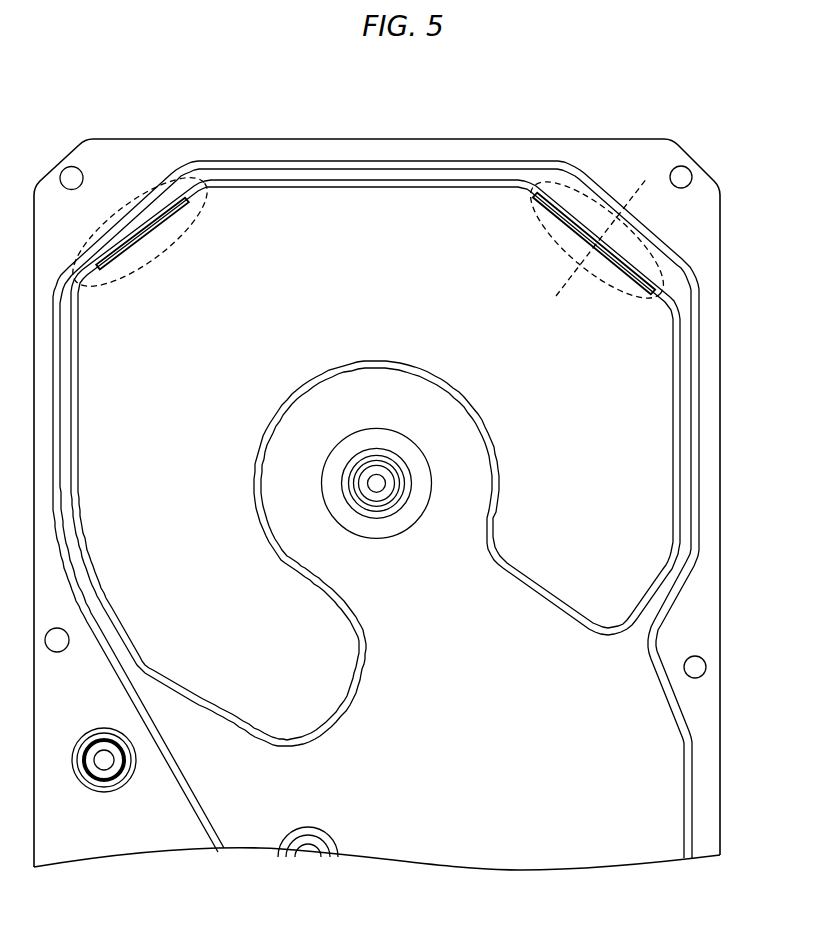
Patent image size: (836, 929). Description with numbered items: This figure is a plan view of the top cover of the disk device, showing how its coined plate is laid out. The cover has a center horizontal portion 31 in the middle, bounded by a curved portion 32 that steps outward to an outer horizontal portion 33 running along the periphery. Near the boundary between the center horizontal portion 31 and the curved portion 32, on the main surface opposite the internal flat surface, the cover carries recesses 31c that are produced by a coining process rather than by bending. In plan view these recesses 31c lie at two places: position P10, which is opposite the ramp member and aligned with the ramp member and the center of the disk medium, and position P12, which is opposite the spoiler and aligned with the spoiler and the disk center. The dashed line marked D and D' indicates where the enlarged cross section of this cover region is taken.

The center horizontal portion 31 is at (362, 213).
The curved portion 32 is at (282, 182).
The outer horizontal portion 33 is at (243, 171).
The recess 31c is at (148, 240).
The position P10 is at (181, 238).
The position P12 is at (544, 236).
The section line end D is at (601, 254).
The section line end D' is at (673, 210).